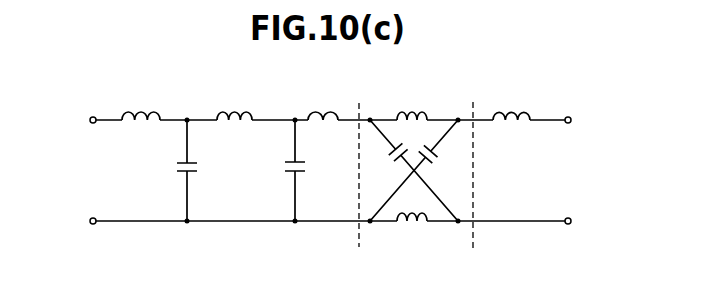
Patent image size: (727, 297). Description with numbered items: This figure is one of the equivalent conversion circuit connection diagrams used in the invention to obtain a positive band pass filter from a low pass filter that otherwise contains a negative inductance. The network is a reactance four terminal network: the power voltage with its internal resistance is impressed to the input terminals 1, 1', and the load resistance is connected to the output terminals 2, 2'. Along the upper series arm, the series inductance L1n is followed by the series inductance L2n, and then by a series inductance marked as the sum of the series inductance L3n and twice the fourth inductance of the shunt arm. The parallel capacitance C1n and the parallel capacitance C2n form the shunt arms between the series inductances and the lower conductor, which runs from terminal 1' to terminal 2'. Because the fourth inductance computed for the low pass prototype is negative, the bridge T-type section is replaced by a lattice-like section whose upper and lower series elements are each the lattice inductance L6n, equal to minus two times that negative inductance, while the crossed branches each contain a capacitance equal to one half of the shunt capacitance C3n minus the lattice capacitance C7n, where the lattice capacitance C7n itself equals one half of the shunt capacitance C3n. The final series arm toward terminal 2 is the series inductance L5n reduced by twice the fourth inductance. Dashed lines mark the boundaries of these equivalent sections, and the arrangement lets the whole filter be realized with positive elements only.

The input terminal 1 is at (85, 121).
The input terminal 1' is at (84, 222).
The output terminal 2 is at (577, 122).
The output terminal 2' is at (579, 223).
The series inductance L1n is at (140, 103).
The series inductance L2n is at (234, 103).
The series inductance L3n is at (367, 80).
The lattice inductance L6n is at (445, 87).
The series inductance L5n is at (580, 87).
The parallel capacitance C1n is at (202, 170).
The parallel capacitance C2n is at (313, 170).
The shunt capacitance C3n is at (454, 162).
The lattice capacitance C7n is at (382, 167).